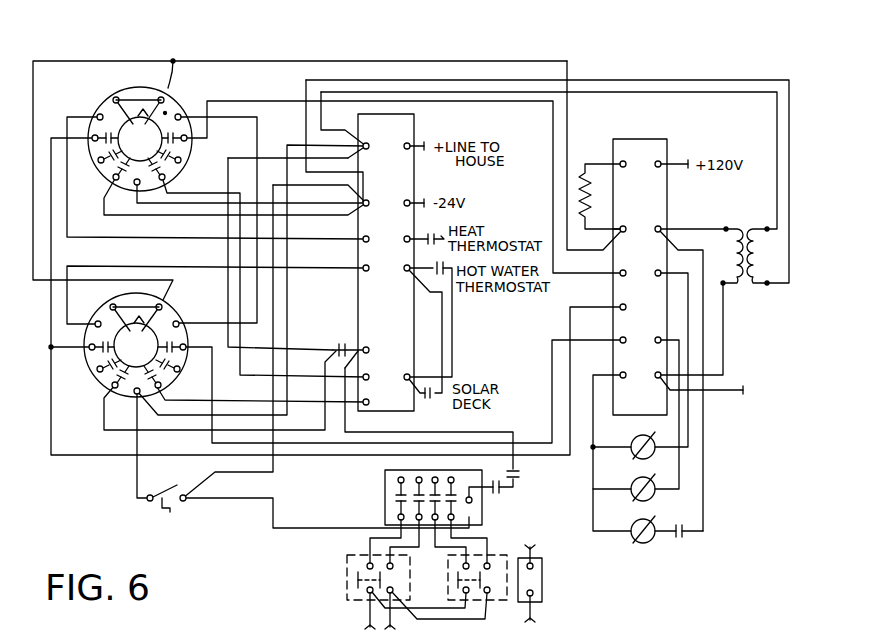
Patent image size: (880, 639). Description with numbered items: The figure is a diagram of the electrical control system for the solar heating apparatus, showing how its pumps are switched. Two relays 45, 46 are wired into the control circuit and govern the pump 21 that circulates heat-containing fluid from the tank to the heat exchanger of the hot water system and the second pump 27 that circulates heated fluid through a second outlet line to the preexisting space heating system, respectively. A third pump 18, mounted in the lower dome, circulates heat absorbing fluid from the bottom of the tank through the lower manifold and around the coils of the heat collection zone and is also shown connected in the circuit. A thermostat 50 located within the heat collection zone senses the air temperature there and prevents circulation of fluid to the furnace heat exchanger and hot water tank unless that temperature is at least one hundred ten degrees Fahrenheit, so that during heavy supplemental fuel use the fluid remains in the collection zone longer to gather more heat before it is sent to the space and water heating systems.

The relay 45 is at (101, 99).
The relay 46 is at (100, 386).
The thermostat 50 is at (176, 486).
The pump 18 is at (633, 459).
The pump 21 is at (633, 501).
The second pump 27 is at (633, 543).